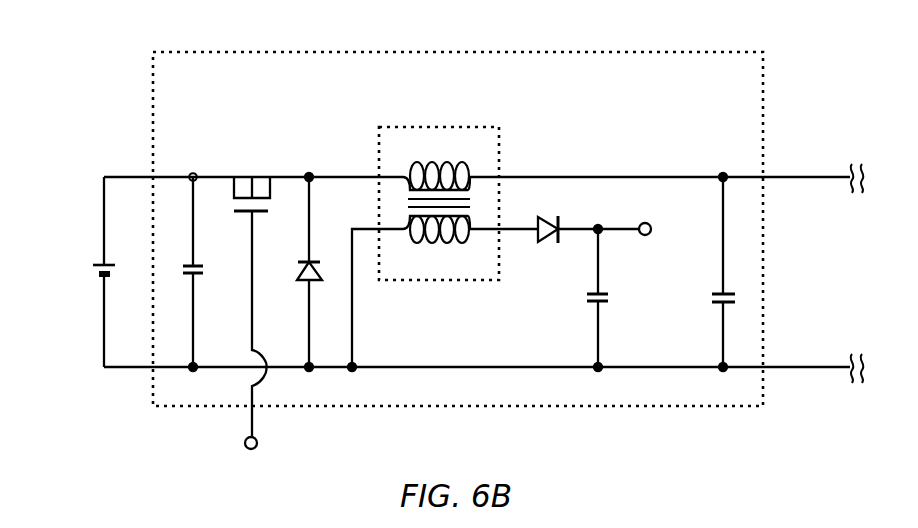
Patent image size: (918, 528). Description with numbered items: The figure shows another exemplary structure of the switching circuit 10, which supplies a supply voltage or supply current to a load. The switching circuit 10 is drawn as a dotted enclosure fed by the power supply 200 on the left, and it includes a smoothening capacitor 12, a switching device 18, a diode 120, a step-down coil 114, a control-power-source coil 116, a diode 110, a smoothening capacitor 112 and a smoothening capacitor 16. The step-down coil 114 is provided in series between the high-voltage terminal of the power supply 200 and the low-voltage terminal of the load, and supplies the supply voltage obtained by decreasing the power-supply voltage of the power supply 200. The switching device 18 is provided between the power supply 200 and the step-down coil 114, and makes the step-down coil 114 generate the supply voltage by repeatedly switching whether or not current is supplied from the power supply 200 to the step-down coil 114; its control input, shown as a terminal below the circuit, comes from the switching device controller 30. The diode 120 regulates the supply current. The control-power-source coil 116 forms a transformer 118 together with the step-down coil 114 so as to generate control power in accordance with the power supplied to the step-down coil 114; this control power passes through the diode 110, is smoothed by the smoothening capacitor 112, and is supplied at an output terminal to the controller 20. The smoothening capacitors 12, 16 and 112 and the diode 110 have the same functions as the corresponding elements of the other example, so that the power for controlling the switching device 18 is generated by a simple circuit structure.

The switching circuit 10 is at (765, 97).
The power supply 200 is at (96, 273).
The smoothening capacitor 12 is at (204, 277).
The switching device 18 is at (243, 214).
The switching device controller 30 is at (252, 461).
The diode 120 is at (315, 258).
The transformer 118 is at (463, 219).
The step-down coil 114 is at (434, 159).
The control-power-source coil 116 is at (434, 252).
The diode 110 is at (545, 245).
The controller 20 is at (662, 229).
The smoothening capacitor 112 is at (608, 295).
The smoothening capacitor 16 is at (710, 300).